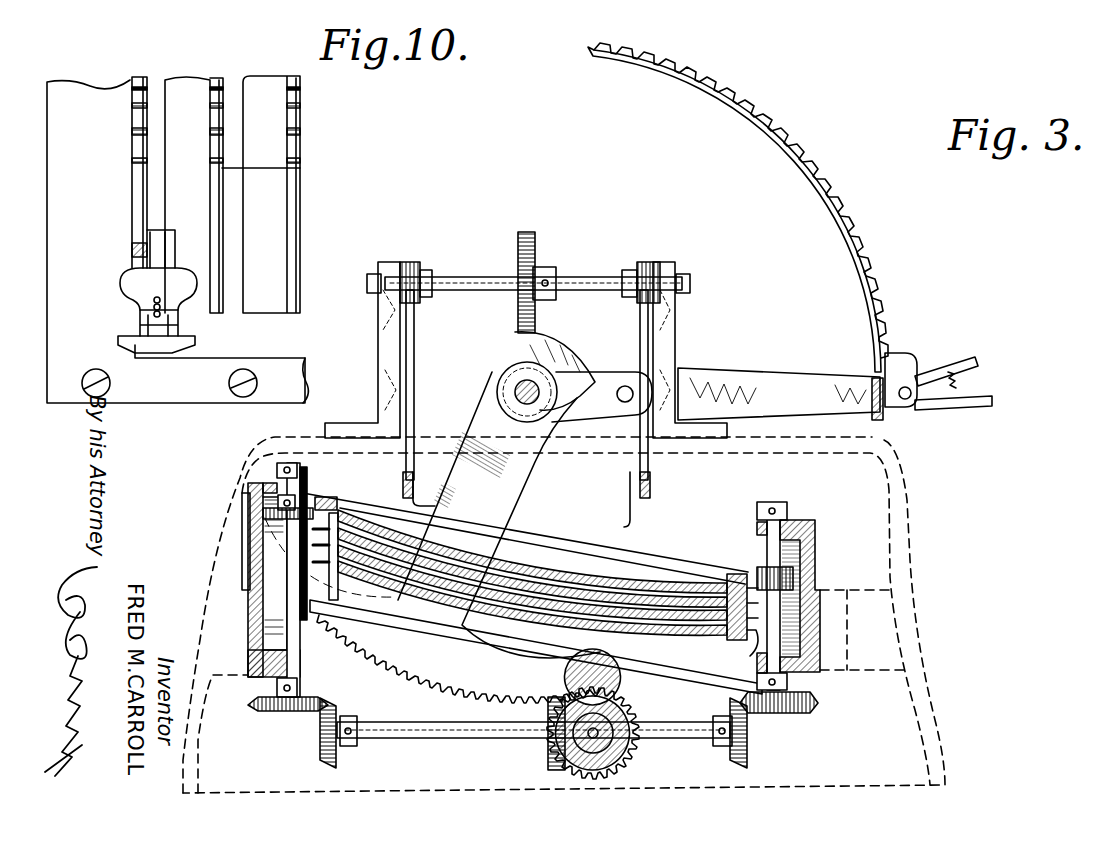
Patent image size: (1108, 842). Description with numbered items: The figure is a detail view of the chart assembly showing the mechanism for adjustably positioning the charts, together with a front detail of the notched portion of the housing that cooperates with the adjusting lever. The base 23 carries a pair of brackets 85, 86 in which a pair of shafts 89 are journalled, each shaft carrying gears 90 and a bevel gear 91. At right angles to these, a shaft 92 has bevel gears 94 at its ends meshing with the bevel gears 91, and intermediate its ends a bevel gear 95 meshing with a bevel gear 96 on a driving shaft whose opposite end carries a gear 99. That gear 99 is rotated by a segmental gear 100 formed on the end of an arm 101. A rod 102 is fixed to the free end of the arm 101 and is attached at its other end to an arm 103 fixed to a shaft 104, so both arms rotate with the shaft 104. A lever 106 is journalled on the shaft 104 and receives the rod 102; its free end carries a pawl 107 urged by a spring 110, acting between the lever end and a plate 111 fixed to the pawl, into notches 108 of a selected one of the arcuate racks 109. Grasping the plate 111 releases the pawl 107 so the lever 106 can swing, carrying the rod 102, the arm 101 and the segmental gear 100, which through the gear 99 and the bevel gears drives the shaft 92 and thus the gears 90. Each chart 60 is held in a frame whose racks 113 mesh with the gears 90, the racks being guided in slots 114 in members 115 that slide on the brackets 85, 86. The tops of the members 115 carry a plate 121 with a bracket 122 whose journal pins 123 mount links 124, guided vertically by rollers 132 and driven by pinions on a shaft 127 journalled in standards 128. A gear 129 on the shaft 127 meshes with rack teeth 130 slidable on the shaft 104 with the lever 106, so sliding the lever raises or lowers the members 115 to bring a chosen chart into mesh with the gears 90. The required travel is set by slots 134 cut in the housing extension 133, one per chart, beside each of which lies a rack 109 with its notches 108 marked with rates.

In FIG. 3, the base 23 is at (895, 581).
In FIG. 3, the chart 60 is at (556, 602).
In FIG. 3, the bracket 85 is at (250, 488).
In FIG. 3, the bracket 86 is at (800, 528).
In FIG. 3, the shaft 89 is at (292, 643).
In FIG. 3, the gear 90 is at (268, 511).
In FIG. 3, the bevel gear 91 is at (280, 710).
In FIG. 3, the shaft 92 is at (462, 735).
In FIG. 3, the bevel gear 94 is at (320, 742).
In FIG. 3, the bevel gear 95 is at (550, 746).
In FIG. 3, the bevel gear 96 is at (626, 756).
In FIG. 3, the gear 99 is at (616, 706).
In FIG. 3, the segmental gear 100 is at (425, 653).
In FIG. 3, the arm 101 is at (498, 491).
In FIG. 3, the rod 102 is at (625, 386).
In FIG. 3, the arm 103 is at (600, 406).
In FIG. 3, the shaft 104 is at (518, 392).
In FIG. 3, the lever 106 is at (783, 385).
In FIG. 10, the pawl 107 is at (143, 258).
In FIG. 3, the pawl 107 is at (895, 356).
In FIG. 10, the notch 108 is at (290, 165).
In FIG. 3, the notch 108 is at (872, 287).
In FIG. 10, the arcuate rack 109 is at (267, 137).
In FIG. 3, the arcuate rack 109 is at (815, 190).
In FIG. 10, the spring 110 is at (153, 312).
In FIG. 3, the spring 110 is at (958, 392).
In FIG. 10, the plate 111 is at (143, 284).
In FIG. 3, the plate 111 is at (955, 372).
In FIG. 3, the rack 113 is at (745, 648).
In FIG. 3, the slot 114 is at (742, 677).
In FIG. 3, the member 115 is at (330, 505).
In FIG. 3, the plate 121 is at (652, 556).
In FIG. 3, the bracket 122 is at (588, 540).
In FIG. 3, the journal pin 123 is at (403, 488).
In FIG. 3, the link 124 is at (410, 355).
In FIG. 3, the shaft 127 is at (485, 278).
In FIG. 3, the standard 128 is at (382, 356).
In FIG. 3, the gear 129 is at (524, 233).
In FIG. 3, the rack teeth 130 is at (560, 343).
In FIG. 3, the guiding roller 132 is at (412, 262).
In FIG. 10, the housing extension 133 is at (82, 95).
In FIG. 10, the slot 134 is at (236, 88).